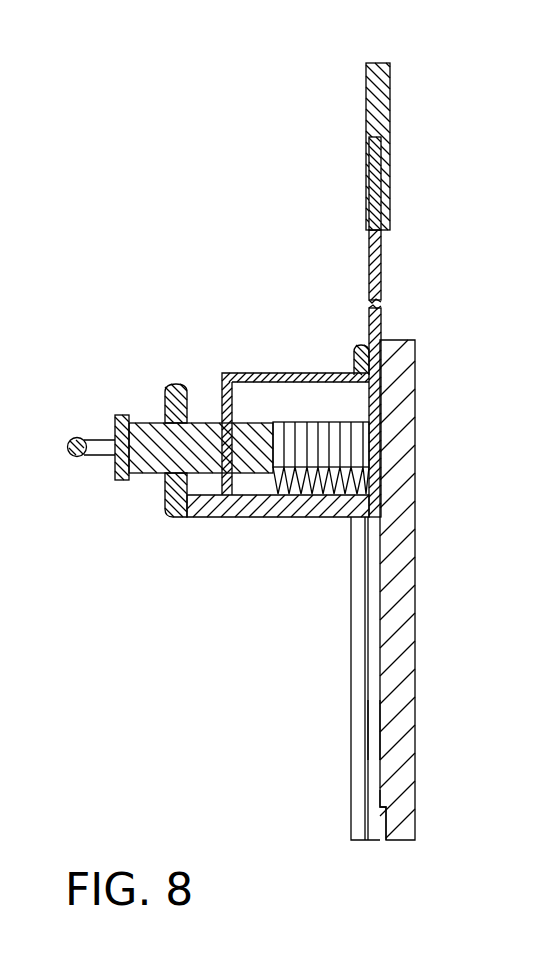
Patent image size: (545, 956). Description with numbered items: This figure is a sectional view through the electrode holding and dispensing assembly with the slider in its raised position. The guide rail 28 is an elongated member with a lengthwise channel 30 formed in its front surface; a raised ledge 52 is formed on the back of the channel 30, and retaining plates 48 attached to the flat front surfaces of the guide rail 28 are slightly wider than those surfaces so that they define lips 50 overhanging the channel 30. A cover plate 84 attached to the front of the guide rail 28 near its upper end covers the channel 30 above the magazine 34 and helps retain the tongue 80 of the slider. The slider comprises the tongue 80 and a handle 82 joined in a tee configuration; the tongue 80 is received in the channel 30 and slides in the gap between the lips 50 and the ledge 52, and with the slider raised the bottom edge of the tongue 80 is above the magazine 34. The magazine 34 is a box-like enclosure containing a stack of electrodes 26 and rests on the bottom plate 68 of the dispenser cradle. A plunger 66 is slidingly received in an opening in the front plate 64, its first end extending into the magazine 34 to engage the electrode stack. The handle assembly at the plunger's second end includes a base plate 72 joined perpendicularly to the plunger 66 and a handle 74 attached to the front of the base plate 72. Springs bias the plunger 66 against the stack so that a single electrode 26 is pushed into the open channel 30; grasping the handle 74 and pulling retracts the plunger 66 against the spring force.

The electrode 26 is at (330, 422).
The guide rail 28 is at (416, 446).
The channel 30 is at (379, 670).
The magazine 34 is at (270, 373).
The retaining plate 48 is at (351, 592).
The lip 50 is at (360, 726).
The ledge 52 is at (378, 797).
The front plate 64 is at (168, 422).
The plunger 66 is at (206, 422).
The bottom plate 68 is at (240, 518).
The base plate 72 is at (117, 468).
The handle 74 is at (68, 440).
The tongue 80 is at (369, 276).
The handle 82 is at (366, 127).
The cover plate 84 is at (355, 345).